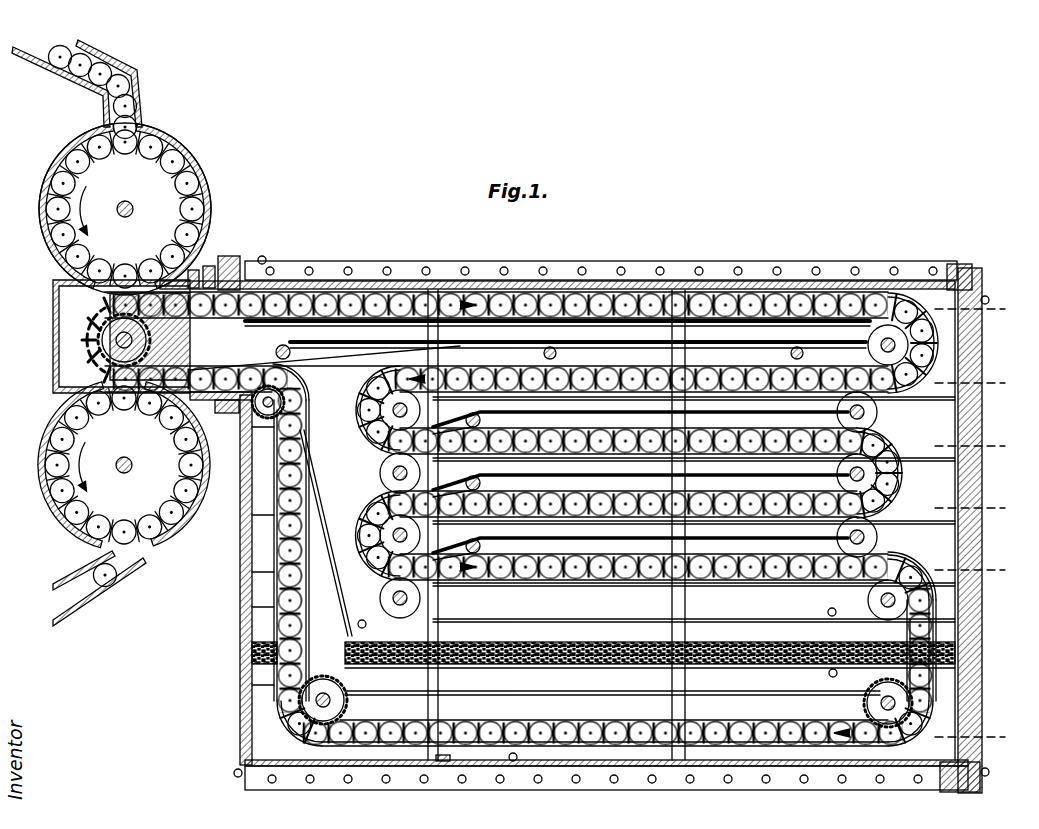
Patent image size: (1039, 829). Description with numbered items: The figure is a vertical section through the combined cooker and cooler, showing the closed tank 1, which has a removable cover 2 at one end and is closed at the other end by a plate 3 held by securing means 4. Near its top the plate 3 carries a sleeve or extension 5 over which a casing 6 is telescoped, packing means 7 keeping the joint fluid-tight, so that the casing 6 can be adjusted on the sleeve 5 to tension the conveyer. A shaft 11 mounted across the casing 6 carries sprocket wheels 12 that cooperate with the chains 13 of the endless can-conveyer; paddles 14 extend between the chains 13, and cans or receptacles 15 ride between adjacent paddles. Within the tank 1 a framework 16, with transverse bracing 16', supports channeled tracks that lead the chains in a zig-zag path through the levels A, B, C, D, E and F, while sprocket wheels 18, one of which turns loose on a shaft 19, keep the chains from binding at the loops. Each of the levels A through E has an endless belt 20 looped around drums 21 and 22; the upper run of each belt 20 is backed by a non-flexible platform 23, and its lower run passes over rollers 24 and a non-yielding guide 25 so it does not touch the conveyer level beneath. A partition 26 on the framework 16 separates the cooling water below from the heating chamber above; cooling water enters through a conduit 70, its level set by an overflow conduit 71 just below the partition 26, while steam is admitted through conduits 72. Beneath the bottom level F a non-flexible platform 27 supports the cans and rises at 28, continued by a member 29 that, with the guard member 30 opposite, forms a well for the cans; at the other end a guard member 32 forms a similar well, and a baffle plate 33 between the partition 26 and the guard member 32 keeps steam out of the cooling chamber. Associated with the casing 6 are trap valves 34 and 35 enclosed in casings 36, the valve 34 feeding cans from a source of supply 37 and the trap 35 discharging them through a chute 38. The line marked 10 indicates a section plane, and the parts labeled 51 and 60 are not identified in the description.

The closed tank 1 is at (975, 720).
The removable cover 2 is at (618, 234).
The plate 3 is at (240, 678).
The securing means 4 is at (265, 258).
The sleeve or extension 5 is at (196, 278).
The casing 6 is at (53, 325).
The packing means 7 is at (230, 260).
The section line 10 is at (100, 46).
The shaft 11 is at (113, 346).
The sprocket wheels 12 is at (150, 340).
The chains 13 is at (102, 372).
The paddles 14 is at (310, 296).
The cans or receptacles 15 is at (370, 300).
The framework 16 is at (649, 497).
The transverse bracing 16' is at (650, 700).
The sprocket wheels 18 is at (340, 690).
The shaft 19 is at (930, 349).
The endless belt 20 is at (525, 298).
The drums 21 is at (878, 600).
The drums 22 is at (383, 410).
The non-flexible platform 23 is at (775, 330).
The rollers 24 is at (290, 354).
The non-yielding guide 25 is at (490, 590).
The partition 26 is at (548, 664).
The non-flexible platform 27 is at (596, 748).
The upwardly extending portion 28 is at (948, 716).
The member 29 is at (903, 560).
The guard member 30 is at (902, 636).
The guard member 32 is at (252, 607).
The baffle plate 33 is at (336, 574).
The trap valve 34 is at (125, 209).
The trap valve 35 is at (124, 465).
The casings 36 is at (195, 150).
The source of supply 37 is at (62, 68).
The chute 38 is at (75, 615).
The partition 51 is at (252, 572).
The pockets 60 is at (152, 142).
The conduit 70 is at (513, 762).
The overflow conduit 71 is at (829, 674).
The conduits 72 is at (357, 623).
The level A is at (979, 309).
The level B is at (979, 383).
The level C is at (979, 446).
The level D is at (980, 508).
The level E is at (978, 570).
The level F is at (978, 737).